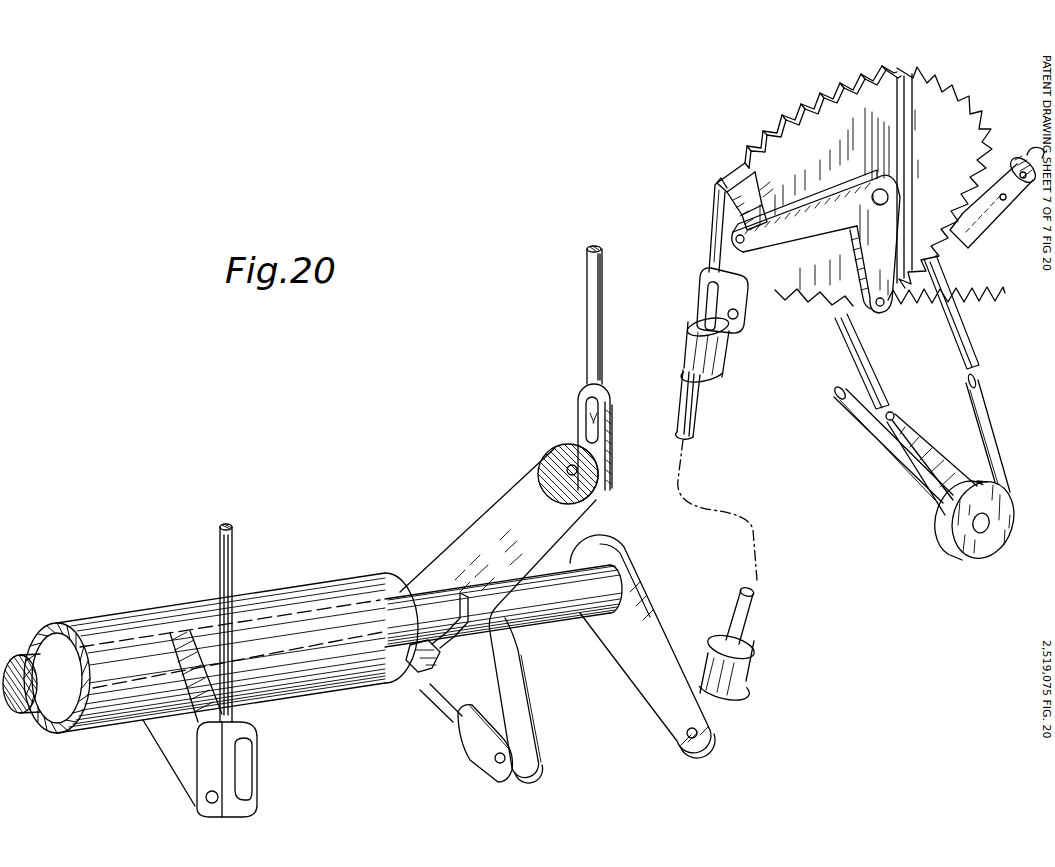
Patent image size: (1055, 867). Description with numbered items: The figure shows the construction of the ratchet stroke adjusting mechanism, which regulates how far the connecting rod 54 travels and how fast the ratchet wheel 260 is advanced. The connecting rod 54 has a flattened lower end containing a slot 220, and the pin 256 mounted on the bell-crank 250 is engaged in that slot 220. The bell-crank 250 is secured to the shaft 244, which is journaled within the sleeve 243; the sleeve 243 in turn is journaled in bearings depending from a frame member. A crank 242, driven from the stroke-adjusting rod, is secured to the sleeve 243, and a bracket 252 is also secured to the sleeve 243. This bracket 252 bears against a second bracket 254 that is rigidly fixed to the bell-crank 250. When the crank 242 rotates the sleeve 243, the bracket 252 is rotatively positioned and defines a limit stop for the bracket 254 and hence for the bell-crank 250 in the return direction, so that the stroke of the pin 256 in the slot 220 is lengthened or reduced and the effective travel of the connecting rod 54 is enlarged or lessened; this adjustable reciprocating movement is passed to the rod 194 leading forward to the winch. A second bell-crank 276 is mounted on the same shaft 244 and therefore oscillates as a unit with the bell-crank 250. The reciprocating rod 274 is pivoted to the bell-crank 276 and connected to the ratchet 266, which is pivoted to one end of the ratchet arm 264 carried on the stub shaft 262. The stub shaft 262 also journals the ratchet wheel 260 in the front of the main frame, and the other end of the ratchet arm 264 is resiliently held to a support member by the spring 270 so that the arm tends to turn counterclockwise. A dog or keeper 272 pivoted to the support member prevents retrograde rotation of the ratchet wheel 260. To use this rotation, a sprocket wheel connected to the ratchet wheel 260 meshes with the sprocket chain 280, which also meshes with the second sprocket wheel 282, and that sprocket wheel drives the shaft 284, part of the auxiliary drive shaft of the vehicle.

The connecting rod 54 is at (582, 392).
The rod 194 is at (484, 760).
The slot 220 is at (597, 420).
The crank 242 is at (183, 766).
The sleeve 243 is at (310, 580).
The shaft 244 is at (397, 596).
The bell-crank 250 is at (520, 713).
The bracket 252 is at (412, 673).
The second bracket 254 is at (470, 640).
The pin 256 is at (568, 468).
The ratchet wheel 260 is at (862, 110).
The stub shaft 262 is at (890, 197).
The ratchet arm 264 is at (795, 232).
The ratchet 266 is at (716, 202).
The spring 270 is at (966, 300).
The dog or keeper 272 is at (969, 216).
The reciprocating rod 274 is at (694, 412).
The bell-crank 276 is at (666, 696).
The sprocket chain 280 is at (976, 386).
The second sprocket wheel 282 is at (987, 497).
The shaft 284 is at (872, 424).